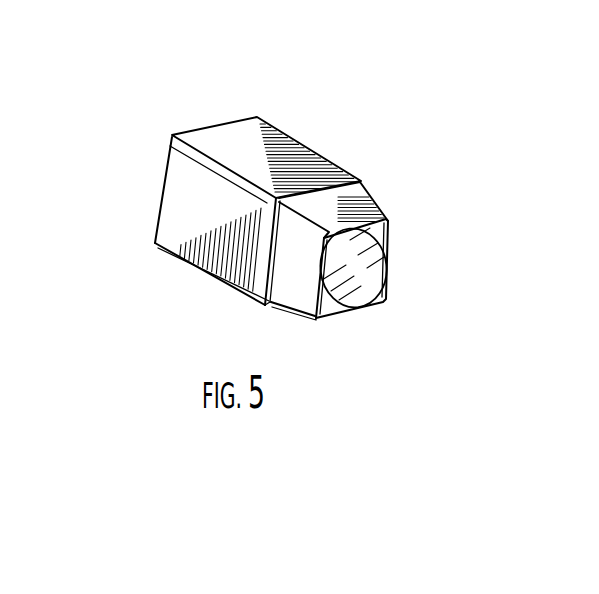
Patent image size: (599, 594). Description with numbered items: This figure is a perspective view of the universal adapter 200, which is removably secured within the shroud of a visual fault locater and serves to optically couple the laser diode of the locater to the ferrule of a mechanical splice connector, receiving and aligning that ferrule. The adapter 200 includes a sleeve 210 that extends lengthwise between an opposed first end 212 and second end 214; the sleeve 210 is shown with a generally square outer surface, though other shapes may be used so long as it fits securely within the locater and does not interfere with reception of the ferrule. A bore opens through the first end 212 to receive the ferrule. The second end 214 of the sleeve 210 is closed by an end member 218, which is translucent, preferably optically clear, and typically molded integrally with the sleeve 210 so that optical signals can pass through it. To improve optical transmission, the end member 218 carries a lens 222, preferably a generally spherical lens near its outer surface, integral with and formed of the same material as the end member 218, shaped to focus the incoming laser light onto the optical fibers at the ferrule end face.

The adapter 200 is at (304, 86).
The sleeve 210 is at (195, 137).
The first end 212 is at (158, 222).
The second end 214 is at (263, 305).
The end member 218 is at (327, 215).
The lens 222 is at (373, 276).